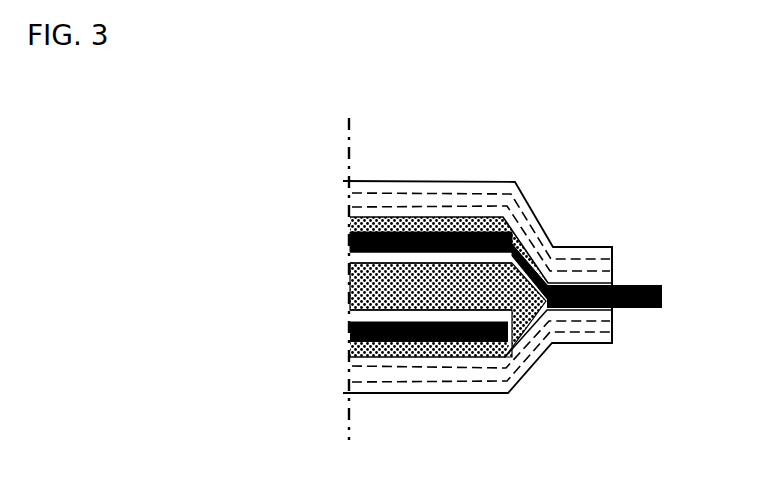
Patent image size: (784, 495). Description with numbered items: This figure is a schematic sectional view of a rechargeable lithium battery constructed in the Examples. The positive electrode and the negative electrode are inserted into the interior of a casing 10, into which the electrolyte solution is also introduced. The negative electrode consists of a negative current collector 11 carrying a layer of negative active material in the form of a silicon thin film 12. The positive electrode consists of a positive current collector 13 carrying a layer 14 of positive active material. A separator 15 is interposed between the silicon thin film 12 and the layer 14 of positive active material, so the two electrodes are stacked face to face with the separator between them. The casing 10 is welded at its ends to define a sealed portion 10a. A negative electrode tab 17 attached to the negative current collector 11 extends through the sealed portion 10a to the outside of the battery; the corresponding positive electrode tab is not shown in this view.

The casing 10 is at (493, 205).
The sealed portion 10a is at (588, 253).
The negative current collector 11 is at (427, 231).
The silicon thin film 12 is at (357, 255).
The positive current collector 13 is at (418, 343).
The layer of positive active material 14 is at (355, 313).
The separator 15 is at (355, 294).
The negative electrode tab 17 is at (647, 287).